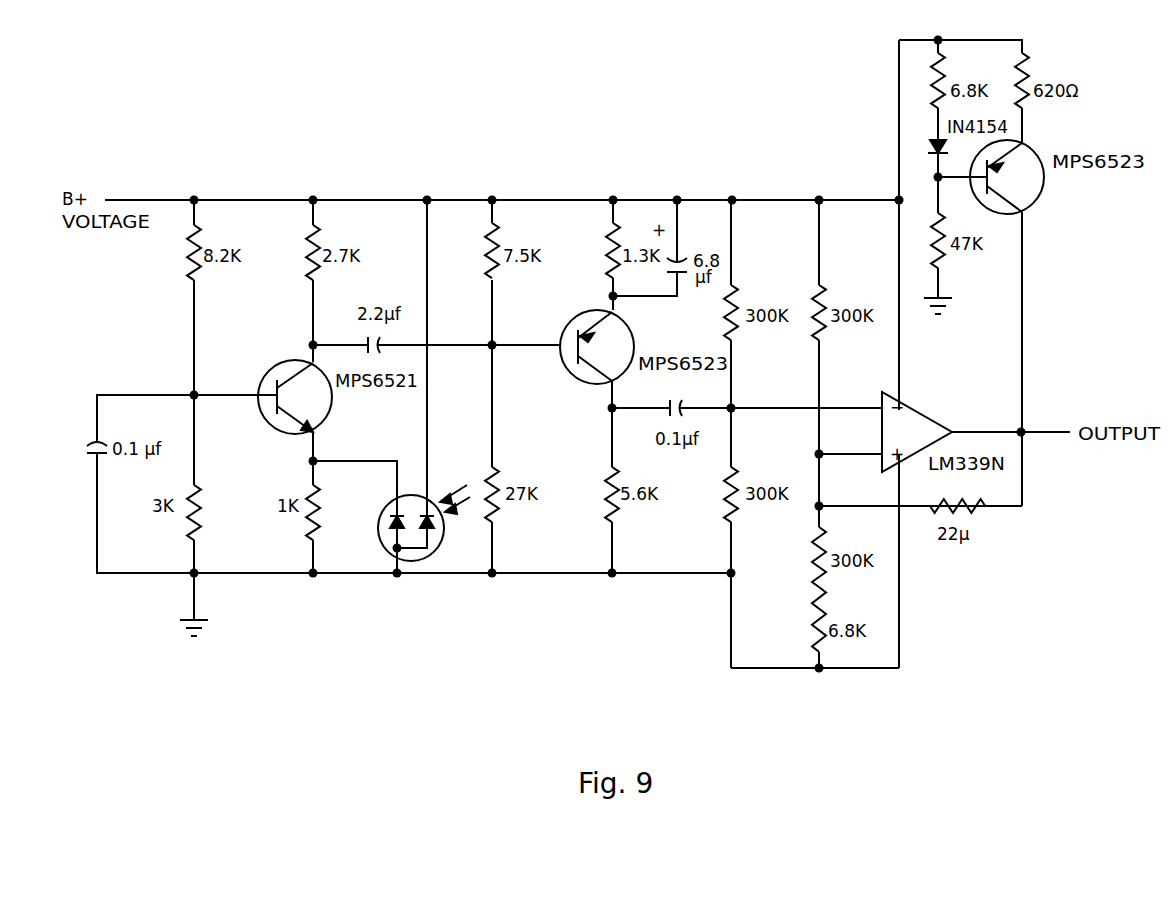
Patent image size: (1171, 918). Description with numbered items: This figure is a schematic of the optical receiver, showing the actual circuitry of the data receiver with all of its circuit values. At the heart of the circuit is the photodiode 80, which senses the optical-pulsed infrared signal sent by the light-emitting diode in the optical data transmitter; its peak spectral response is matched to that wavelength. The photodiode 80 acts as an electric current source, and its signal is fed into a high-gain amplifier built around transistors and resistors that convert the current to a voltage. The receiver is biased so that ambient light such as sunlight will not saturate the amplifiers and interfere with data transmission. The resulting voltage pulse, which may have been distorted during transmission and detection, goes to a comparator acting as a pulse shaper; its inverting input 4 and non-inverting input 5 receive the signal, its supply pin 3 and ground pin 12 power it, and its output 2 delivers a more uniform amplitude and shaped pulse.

The photodiode 80 is at (418, 560).
The comparator output pin 2 is at (1011, 420).
The comparator supply pin 3 is at (909, 392).
The comparator inverting input pin 4 is at (850, 397).
The comparator non-inverting input pin 5 is at (850, 443).
The comparator ground pin 12 is at (912, 474).